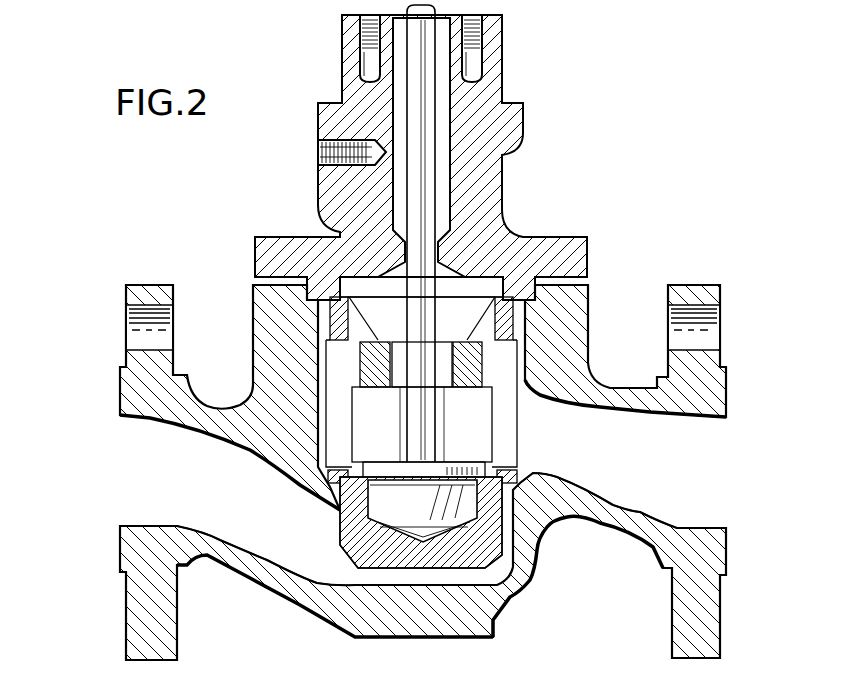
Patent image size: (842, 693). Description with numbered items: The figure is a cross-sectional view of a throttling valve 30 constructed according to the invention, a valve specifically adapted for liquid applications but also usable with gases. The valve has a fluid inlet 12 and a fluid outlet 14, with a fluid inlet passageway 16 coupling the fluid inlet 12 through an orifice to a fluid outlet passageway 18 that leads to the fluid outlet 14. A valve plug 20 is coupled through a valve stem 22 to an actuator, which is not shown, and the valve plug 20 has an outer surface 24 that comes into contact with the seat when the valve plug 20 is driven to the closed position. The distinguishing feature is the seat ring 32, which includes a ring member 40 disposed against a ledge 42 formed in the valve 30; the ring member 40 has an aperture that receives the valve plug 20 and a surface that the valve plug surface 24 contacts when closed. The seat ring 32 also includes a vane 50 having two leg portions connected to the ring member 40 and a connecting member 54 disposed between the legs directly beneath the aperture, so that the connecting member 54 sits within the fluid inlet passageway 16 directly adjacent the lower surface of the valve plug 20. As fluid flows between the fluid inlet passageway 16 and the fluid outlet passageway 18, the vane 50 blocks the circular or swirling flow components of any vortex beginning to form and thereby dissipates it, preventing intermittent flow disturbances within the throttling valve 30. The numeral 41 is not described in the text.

The fluid inlet 12 is at (118, 440).
The fluid outlet 14 is at (728, 487).
The fluid inlet passageway 16 is at (150, 503).
The fluid outlet passageway 18 is at (705, 434).
The valve plug 20 is at (419, 515).
The valve stem 22 is at (417, 212).
The valve plug outer surface 24 is at (387, 473).
The throttling valve 30 is at (575, 110).
The seat ring 32 is at (547, 537).
The ring member 40 is at (520, 483).
The cage 41 is at (516, 472).
The ledge 42 is at (338, 497).
The vane 50 is at (510, 583).
The connecting member 54 is at (372, 550).